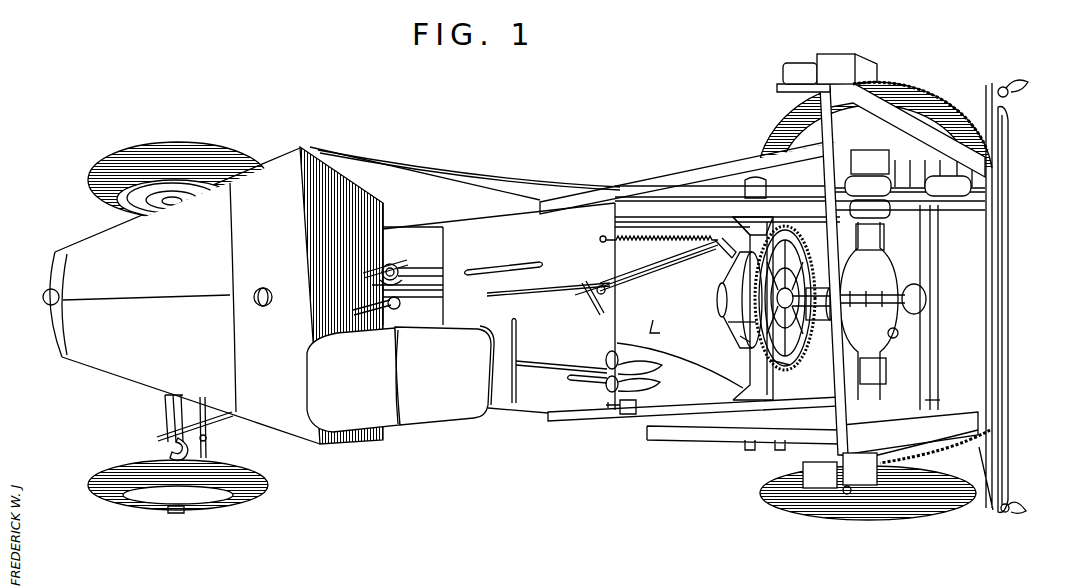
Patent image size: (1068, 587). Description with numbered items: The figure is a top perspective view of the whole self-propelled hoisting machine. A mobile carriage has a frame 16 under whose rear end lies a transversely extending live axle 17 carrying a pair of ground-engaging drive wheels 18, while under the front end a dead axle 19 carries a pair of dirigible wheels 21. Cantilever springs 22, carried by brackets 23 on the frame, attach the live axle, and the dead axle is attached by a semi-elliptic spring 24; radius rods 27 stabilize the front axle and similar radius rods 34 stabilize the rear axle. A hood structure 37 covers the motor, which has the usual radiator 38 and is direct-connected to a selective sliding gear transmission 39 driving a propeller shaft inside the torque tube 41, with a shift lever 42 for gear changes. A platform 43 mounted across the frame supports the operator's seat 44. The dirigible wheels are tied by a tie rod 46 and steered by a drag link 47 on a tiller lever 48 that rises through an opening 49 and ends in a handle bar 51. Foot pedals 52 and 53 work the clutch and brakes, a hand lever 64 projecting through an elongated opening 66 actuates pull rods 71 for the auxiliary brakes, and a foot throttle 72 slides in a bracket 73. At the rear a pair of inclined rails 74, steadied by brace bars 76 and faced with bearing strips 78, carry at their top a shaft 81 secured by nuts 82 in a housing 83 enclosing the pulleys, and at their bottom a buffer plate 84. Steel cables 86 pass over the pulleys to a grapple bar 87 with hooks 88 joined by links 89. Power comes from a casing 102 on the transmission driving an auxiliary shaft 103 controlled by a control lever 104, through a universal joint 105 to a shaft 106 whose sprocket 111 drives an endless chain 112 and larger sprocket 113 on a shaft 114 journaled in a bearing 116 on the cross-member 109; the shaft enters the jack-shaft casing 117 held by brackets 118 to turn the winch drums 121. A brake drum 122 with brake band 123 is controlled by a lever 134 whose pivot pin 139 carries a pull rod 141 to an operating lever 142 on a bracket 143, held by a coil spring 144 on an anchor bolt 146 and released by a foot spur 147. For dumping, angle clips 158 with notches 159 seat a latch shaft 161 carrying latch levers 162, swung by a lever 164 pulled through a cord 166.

The frame 16 is at (676, 208).
The live axle 17 is at (895, 338).
The drive wheels 18 is at (790, 129).
The dead axle 19 is at (170, 452).
The dirigible wheels 21 is at (170, 152).
The cantilever springs 22 is at (805, 173).
The brackets 23 is at (755, 185).
The semi-elliptic spring 24 is at (163, 397).
The radius rods 27 is at (212, 424).
The radius rods 34 is at (686, 362).
The hood structure 37 is at (150, 271).
The radiator 38 is at (55, 296).
The selective sliding gear transmission 39 is at (436, 289).
The torque tube 41 is at (664, 333).
The shift lever 42 is at (432, 305).
The platform 43 is at (480, 228).
The operator's seat 44 is at (433, 383).
The tie rod 46 is at (208, 440).
The drag link 47 is at (209, 410).
The tiller lever 48 is at (547, 364).
The opening 49 is at (572, 377).
The handle bar 51 is at (517, 333).
The foot pedal 52 is at (607, 357).
The foot pedal 53 is at (606, 386).
The hand lever 64 is at (524, 266).
The elongated opening 66 is at (480, 271).
The pull rods 71 is at (808, 224).
The foot throttle 72 is at (605, 405).
The bracket 73 is at (623, 415).
The inclined rails 74 is at (793, 82).
The brace bars 76 is at (707, 167).
The bearing strip 78 is at (892, 122).
The shaft 81 is at (838, 374).
The nuts 82 is at (848, 494).
The housing 83 is at (842, 70).
The buffer plate 84 is at (1000, 186).
The steel cables 86 is at (950, 94).
The grapple bar 87 is at (995, 308).
The hooks 88 is at (1012, 86).
The links 89 is at (1004, 97).
The casing 102 is at (386, 268).
The auxiliary shaft 103 is at (406, 279).
The control lever 104 is at (399, 268).
The universal joint 105 is at (434, 266).
The shaft 106 is at (651, 257).
The cross-member 109 is at (752, 232).
The sprocket 111 is at (798, 268).
The endless chain 112 is at (783, 353).
The larger sprocket 113 is at (781, 333).
The shaft 114 is at (798, 306).
The bearing 116 is at (717, 293).
The jack-shaft casing 117 is at (876, 288).
The brackets 118 is at (900, 400).
The winch drums 121 is at (880, 170).
The brake drum 122 is at (753, 323).
The brake band 123 is at (752, 340).
The lever 134 is at (714, 256).
The pivot pin 139 is at (658, 270).
The pull rod 141 is at (600, 284).
The operating lever 142 is at (547, 292).
The bracket 143 is at (607, 291).
The coil spring 144 is at (678, 237).
The anchor bolt 146 is at (604, 236).
The spur 147 is at (590, 305).
The angle clips 158 is at (942, 205).
The notch 159 is at (960, 197).
The latch shaft 161 is at (927, 323).
The latch lever 162 is at (950, 400).
The lever 164 is at (908, 222).
The cord 166 is at (561, 183).